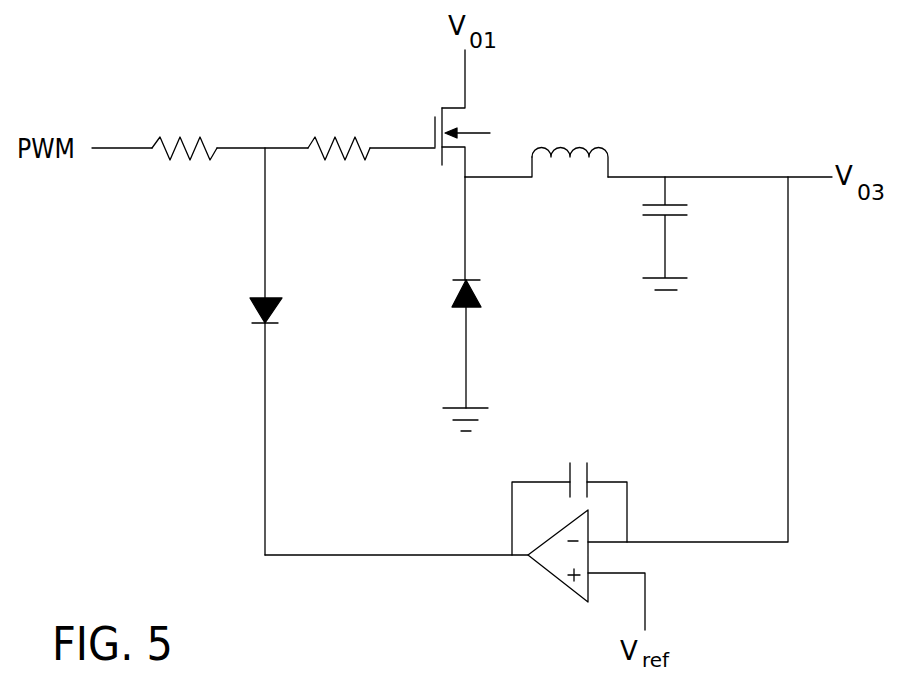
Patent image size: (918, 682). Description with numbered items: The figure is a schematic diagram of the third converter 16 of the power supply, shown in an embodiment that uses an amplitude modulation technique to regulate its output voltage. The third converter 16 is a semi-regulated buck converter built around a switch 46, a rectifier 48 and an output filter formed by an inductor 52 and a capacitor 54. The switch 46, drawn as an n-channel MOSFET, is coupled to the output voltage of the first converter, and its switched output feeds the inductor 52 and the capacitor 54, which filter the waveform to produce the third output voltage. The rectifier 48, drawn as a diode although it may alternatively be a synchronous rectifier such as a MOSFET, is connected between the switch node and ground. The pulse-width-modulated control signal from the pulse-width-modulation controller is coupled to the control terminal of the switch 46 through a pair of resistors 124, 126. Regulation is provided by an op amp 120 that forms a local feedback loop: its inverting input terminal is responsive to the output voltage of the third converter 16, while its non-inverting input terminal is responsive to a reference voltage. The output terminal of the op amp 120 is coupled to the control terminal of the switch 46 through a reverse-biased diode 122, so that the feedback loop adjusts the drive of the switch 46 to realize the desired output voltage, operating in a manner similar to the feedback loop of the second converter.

The third converter 16 is at (752, 133).
The switch 46 is at (468, 120).
The rectifier 48 is at (483, 300).
The inductor 52 is at (600, 150).
The capacitor 54 is at (687, 210).
The op amp 120 is at (553, 573).
The reverse-biased diode 122 is at (277, 310).
The resistor 124 is at (178, 144).
The resistor 126 is at (312, 144).